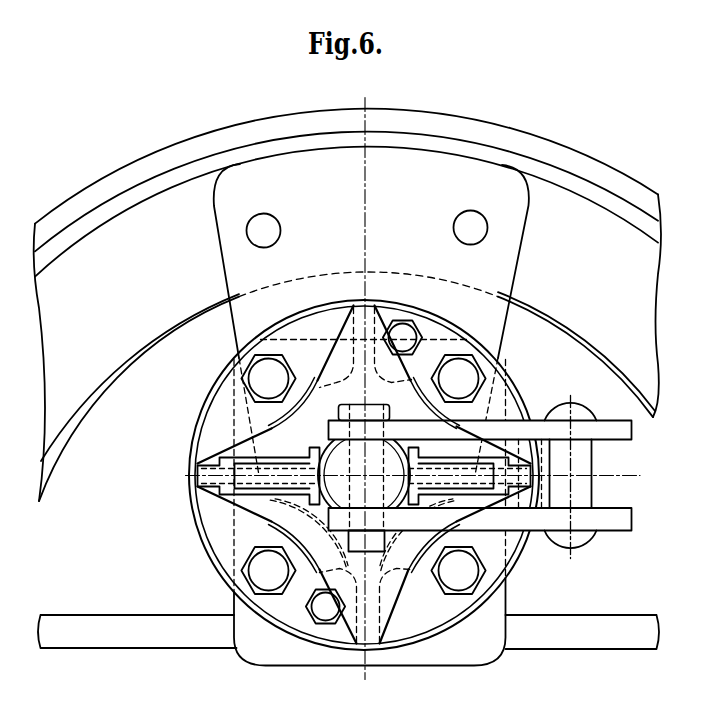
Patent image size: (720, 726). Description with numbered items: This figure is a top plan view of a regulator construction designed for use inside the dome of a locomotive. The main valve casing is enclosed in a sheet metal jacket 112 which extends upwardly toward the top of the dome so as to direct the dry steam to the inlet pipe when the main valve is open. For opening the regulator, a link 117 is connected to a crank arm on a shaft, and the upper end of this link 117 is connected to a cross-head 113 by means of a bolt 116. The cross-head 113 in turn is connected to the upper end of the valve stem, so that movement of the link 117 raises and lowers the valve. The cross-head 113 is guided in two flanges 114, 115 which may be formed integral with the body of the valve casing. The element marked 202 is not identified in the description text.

The sheet metal jacket 112 is at (216, 382).
The cross-head 113 is at (364, 475).
The flange 114 is at (259, 476).
The flange 115 is at (470, 476).
The bolt 116 is at (360, 539).
The link 117 is at (612, 430).
The clamp bar 202 is at (328, 427).